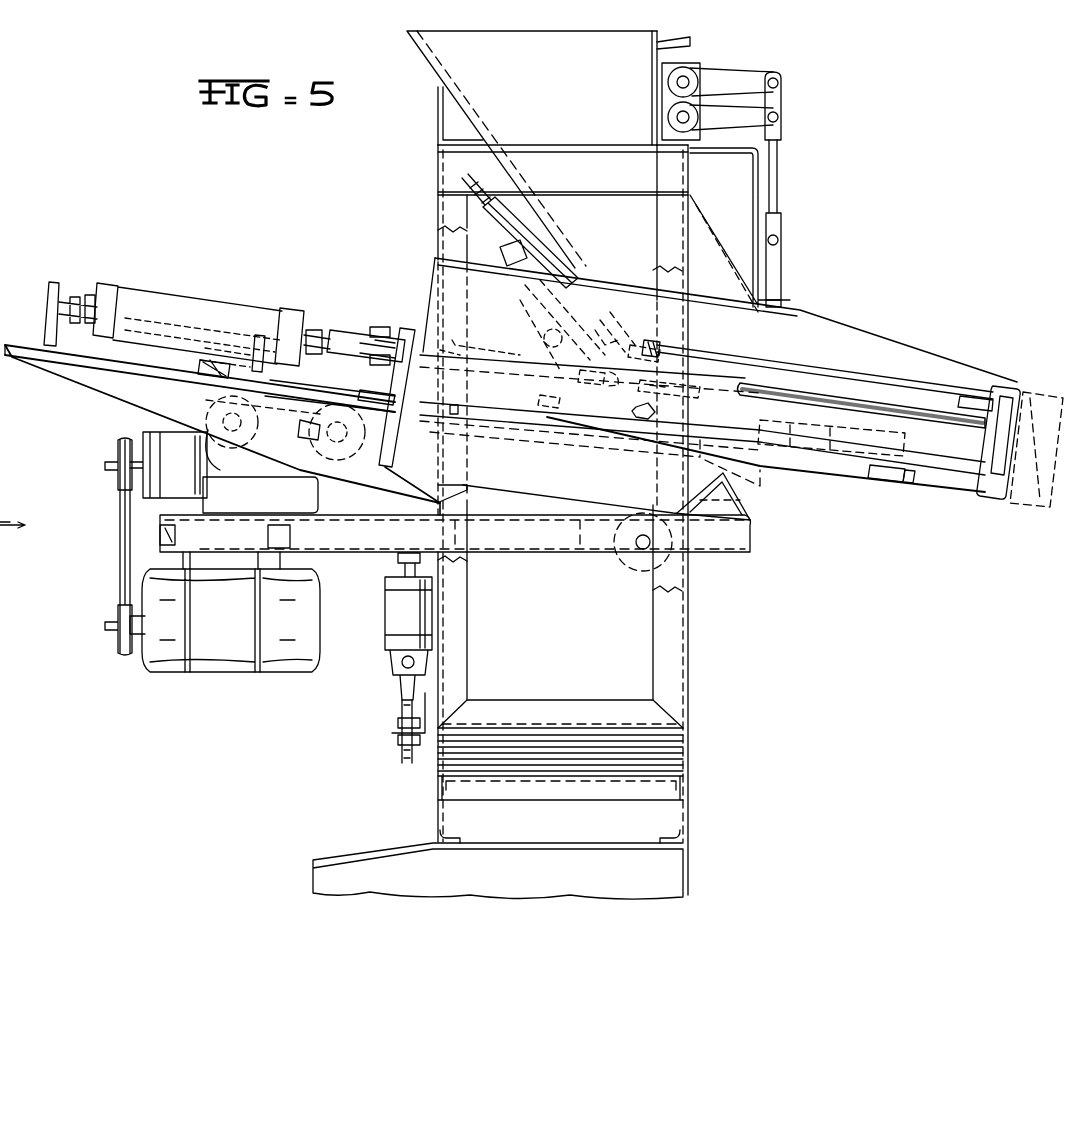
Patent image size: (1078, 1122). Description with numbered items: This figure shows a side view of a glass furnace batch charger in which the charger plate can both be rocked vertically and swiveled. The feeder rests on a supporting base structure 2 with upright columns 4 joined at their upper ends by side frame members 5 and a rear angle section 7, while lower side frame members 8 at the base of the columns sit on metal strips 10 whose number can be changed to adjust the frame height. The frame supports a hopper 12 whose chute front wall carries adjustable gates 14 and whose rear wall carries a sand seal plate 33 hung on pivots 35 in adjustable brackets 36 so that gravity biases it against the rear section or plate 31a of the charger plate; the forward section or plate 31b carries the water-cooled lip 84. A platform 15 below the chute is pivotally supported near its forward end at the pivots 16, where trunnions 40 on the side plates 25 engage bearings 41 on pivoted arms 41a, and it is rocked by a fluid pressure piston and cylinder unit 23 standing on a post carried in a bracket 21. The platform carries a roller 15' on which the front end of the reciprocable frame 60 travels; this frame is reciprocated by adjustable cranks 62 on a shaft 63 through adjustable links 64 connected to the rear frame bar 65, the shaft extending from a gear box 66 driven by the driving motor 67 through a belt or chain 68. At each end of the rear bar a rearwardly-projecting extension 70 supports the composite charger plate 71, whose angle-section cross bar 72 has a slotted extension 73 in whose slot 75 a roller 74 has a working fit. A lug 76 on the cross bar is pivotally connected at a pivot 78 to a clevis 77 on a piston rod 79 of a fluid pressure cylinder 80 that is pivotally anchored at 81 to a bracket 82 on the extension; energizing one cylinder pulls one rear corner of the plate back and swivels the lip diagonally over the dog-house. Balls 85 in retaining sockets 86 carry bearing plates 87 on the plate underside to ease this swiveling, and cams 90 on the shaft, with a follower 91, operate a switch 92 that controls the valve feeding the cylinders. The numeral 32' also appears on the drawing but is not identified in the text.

The supporting base structure 2 is at (395, 849).
The upright columns 4 is at (456, 658).
The side frame members 5 is at (598, 185).
The rear angle section 7 is at (438, 128).
The lower side frame members 8 is at (560, 708).
The metal strips 10 is at (685, 758).
The hopper 12 is at (425, 52).
The adjustable gates 14 is at (772, 284).
The platform 15 is at (455, 535).
The roller 15' is at (641, 556).
The pivots 16 is at (660, 382).
The bracket 21 is at (395, 735).
The fluid pressure piston and cylinder unit 23 is at (388, 608).
The side plates 25 is at (733, 505).
The rear section or plate 31a is at (486, 329).
The forward section or plate 31b is at (932, 395).
The rod 32' is at (817, 384).
The plate 33 is at (615, 327).
The pivots 35 is at (544, 338).
The adjustable brackets 36 is at (505, 260).
The trunnion 40 is at (600, 372).
The bearing 41 is at (630, 343).
The pivoted arm 41a is at (520, 396).
The reciprocable frame 60 is at (820, 478).
The adjustable cranks 62 is at (302, 462).
The shaft 63 is at (278, 458).
The adjustable links 64 is at (336, 444).
The rear frame bar 65 is at (388, 468).
The gear box 66 is at (225, 536).
The driving motor 67 is at (243, 660).
The belt or chain 68 is at (118, 535).
The rearwardly-projecting extension 70 is at (80, 362).
The composite charger plate 71 is at (922, 342).
The cross bar 72 is at (415, 325).
The slotted extension 73 is at (200, 366).
The roller 74 is at (370, 398).
The slot 75 is at (338, 385).
The lug 76 is at (452, 345).
The clevis 77 is at (348, 340).
The pivot 78 is at (385, 333).
The piston rod 79 is at (325, 334).
The fluid pressure cylinder 80 is at (157, 302).
The pivotal anchor 81 is at (82, 290).
The bracket 82 is at (52, 305).
The water-cooled lip 84 is at (995, 498).
The balls 85 is at (880, 480).
The retaining sockets 86 is at (906, 482).
The bearing plate 87 is at (906, 442).
The cams 90 is at (237, 462).
The follower 91 is at (236, 322).
The switch 92 is at (270, 335).